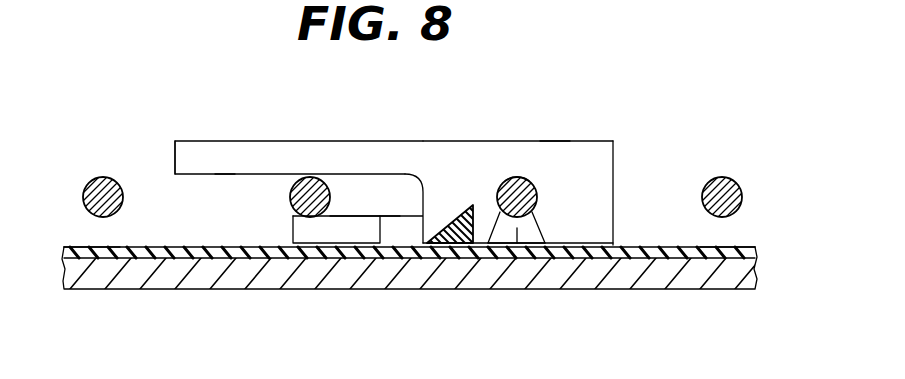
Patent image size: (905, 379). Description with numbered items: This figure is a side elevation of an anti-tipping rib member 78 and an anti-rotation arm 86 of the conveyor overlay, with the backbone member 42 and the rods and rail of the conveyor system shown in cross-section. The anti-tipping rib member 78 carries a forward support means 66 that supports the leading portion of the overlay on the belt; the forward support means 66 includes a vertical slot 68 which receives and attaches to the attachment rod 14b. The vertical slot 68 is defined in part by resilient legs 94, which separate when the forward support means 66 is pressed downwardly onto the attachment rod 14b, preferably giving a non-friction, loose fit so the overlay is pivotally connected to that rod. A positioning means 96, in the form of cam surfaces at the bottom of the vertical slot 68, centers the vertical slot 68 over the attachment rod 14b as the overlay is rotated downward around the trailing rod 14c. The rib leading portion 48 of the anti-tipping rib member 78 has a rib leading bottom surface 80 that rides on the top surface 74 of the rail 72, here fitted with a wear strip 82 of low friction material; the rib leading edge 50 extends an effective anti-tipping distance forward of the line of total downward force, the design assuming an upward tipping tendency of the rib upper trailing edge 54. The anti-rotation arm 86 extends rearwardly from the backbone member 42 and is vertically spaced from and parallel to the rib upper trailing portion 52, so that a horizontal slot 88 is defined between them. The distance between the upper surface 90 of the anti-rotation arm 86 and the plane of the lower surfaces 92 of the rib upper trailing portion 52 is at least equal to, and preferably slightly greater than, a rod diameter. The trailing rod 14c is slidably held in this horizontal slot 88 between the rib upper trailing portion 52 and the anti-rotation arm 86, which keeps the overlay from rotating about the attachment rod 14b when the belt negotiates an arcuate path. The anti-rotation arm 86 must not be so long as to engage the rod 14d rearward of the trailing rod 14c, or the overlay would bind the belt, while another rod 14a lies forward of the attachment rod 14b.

The rod 14a is at (722, 179).
The attachment rod 14b is at (500, 182).
The trailing rod 14c is at (315, 180).
The rod rearward of the trailing rod 14d is at (112, 178).
The backbone member 42 is at (458, 222).
The rib leading portion 48 is at (577, 155).
The rib leading edge 50 is at (613, 164).
The rib upper trailing portion 52 is at (203, 153).
The rib upper trailing edge 54 is at (175, 153).
The forward support means 66 is at (521, 163).
The vertical slot 68 is at (517, 232).
The rail 72 is at (712, 290).
The top surface of the rail 74 is at (740, 244).
The anti-tipping rib member 78 is at (558, 129).
The rib leading bottom surface 80 is at (598, 241).
The wear strip 82 is at (82, 247).
The anti-rotation arm 86 is at (337, 232).
The horizontal slot 88 is at (377, 188).
The upper surface of the anti-rotation arm 90 is at (366, 216).
The lower surfaces of the rib upper trailing portions 92 is at (219, 180).
The resilient legs 94 is at (498, 190).
The positioning means 96 is at (543, 247).